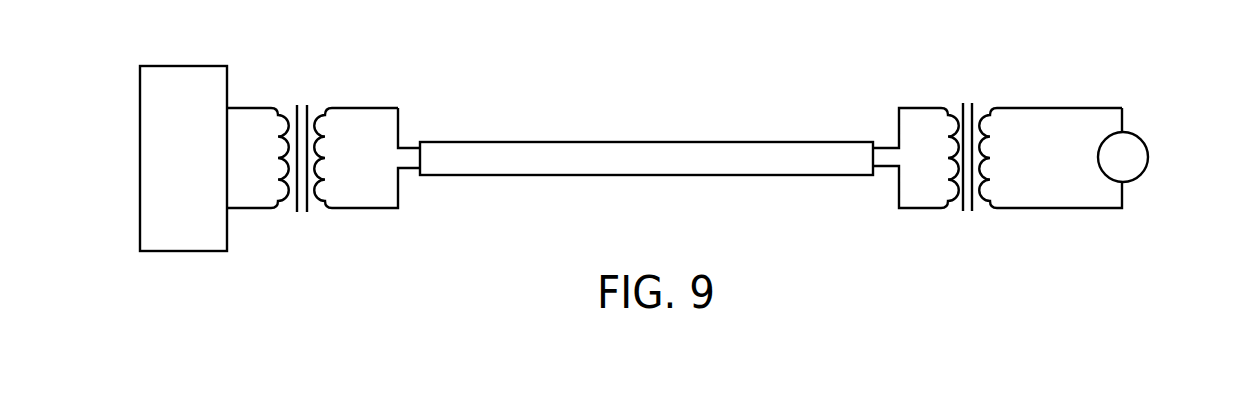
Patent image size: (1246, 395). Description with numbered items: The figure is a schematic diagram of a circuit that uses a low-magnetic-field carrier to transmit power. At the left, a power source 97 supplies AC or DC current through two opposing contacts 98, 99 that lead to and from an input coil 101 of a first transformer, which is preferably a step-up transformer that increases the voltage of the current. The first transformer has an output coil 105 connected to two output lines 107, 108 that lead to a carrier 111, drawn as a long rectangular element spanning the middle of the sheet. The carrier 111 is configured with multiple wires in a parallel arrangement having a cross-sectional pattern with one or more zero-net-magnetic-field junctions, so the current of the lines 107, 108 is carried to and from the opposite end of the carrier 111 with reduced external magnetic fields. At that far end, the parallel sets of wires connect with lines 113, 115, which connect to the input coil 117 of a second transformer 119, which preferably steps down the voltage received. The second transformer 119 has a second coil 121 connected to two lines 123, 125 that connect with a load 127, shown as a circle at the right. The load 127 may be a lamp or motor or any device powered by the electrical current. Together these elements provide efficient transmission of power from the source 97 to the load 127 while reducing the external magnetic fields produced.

The power source 97 is at (198, 168).
The opposing contact 98 is at (252, 209).
The opposing contact 99 is at (246, 107).
The input coil 101 is at (277, 140).
The output coil 105 is at (326, 140).
The output line 107 is at (400, 192).
The output line 108 is at (400, 127).
The carrier 111 is at (637, 141).
The line 113 is at (928, 209).
The line 115 is at (927, 107).
The input coil 117 is at (945, 172).
The second transformer 119 is at (977, 90).
The second coil 121 is at (993, 138).
The line 123 is at (1042, 209).
The line 125 is at (1062, 107).
The load 127 is at (1128, 152).